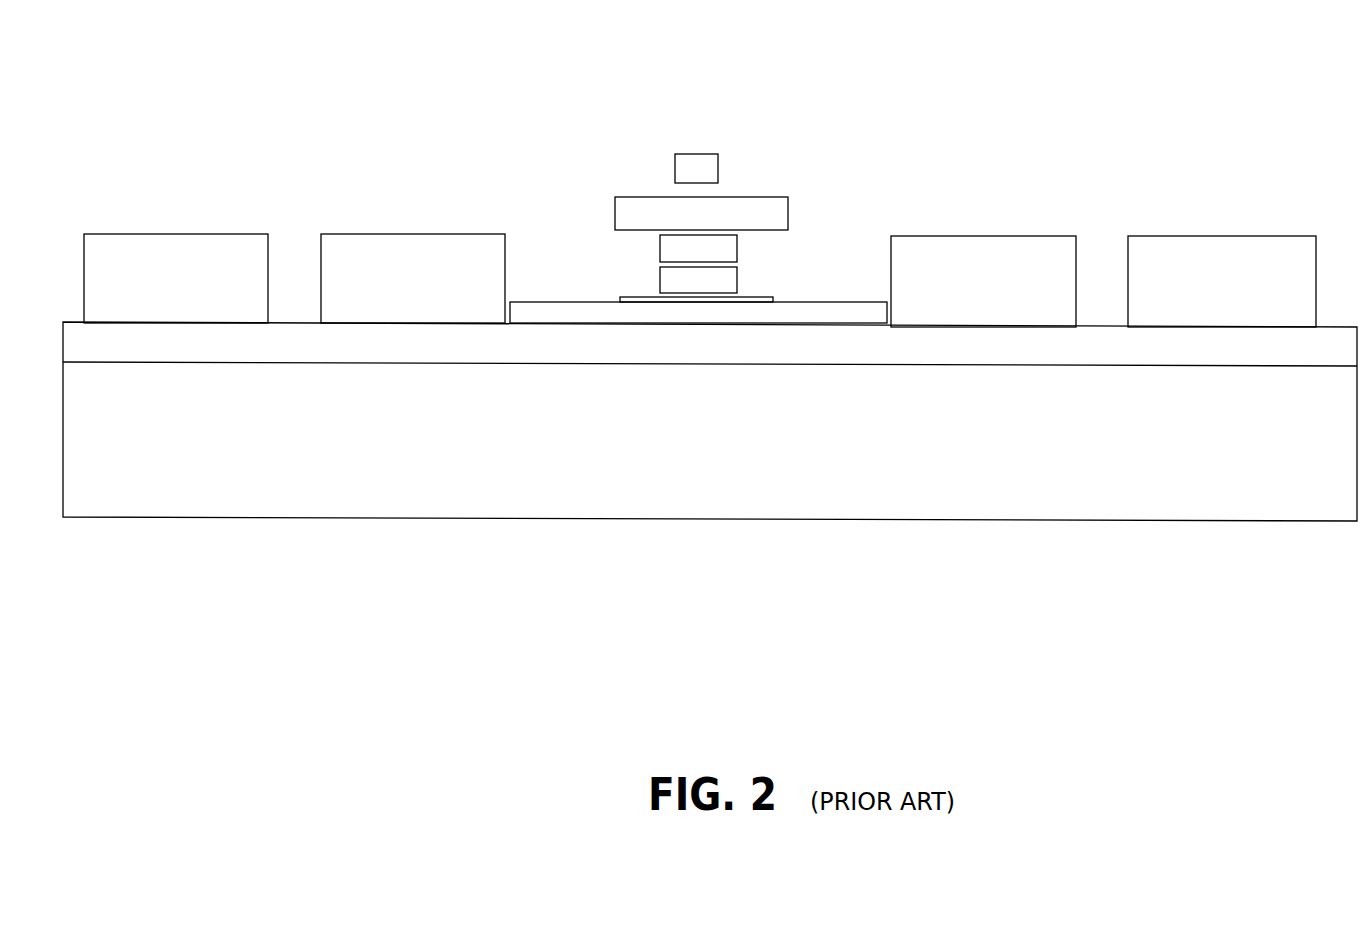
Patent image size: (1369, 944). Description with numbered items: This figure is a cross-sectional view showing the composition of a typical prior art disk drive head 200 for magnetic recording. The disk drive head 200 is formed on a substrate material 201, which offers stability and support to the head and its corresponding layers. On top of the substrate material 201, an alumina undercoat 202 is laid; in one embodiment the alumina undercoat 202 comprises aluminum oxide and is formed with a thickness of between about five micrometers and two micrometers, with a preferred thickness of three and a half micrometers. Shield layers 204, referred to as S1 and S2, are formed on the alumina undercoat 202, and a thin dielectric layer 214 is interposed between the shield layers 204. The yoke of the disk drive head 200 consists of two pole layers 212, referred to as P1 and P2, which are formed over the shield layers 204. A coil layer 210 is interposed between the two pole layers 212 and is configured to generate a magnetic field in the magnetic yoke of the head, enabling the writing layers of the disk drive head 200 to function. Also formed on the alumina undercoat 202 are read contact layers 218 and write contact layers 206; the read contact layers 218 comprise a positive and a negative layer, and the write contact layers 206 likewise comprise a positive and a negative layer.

The disk drive head 200 is at (134, 56).
The substrate material 201 is at (625, 452).
The alumina undercoat 202 is at (848, 340).
The shield layers 204 is at (672, 280).
The write contact layers 206 is at (170, 262).
The coil layer 210 is at (635, 208).
The pole layers 212 is at (728, 252).
The thin dielectric layer 214 is at (767, 300).
The read contact layers 218 is at (982, 268).